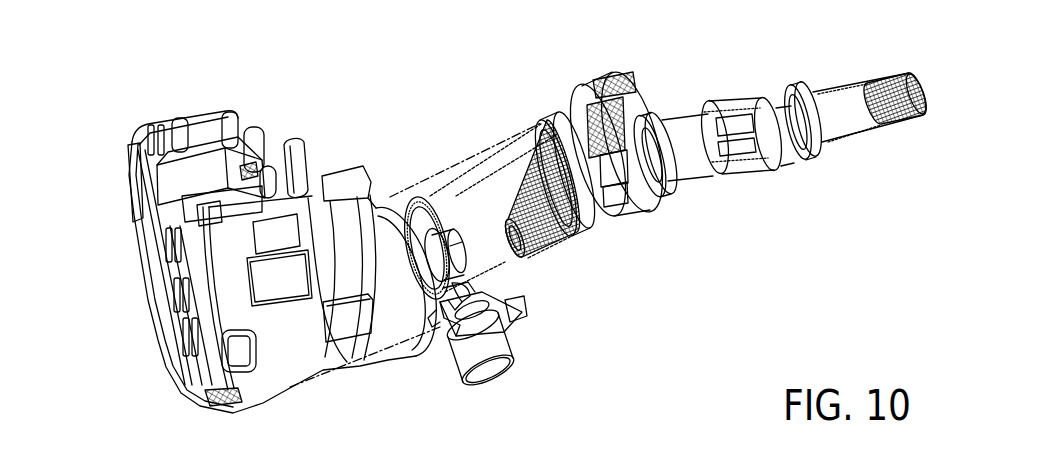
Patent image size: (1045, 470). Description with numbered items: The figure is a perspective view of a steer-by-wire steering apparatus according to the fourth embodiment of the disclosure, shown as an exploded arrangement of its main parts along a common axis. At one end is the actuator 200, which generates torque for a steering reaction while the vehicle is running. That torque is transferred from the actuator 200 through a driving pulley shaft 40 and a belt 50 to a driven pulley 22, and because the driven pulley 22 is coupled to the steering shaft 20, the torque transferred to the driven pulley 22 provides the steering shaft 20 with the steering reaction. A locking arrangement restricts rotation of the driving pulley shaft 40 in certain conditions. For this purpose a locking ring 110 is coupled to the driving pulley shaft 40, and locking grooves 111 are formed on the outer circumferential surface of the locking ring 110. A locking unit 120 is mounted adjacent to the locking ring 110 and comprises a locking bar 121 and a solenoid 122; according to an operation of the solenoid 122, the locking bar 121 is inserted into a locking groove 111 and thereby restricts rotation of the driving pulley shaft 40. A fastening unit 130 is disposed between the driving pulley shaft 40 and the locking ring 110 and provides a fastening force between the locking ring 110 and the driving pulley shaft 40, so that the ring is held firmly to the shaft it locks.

The steering shaft 20 is at (685, 127).
The driven pulley 22 is at (552, 122).
The driving pulley shaft 40 is at (547, 250).
The belt 50 is at (498, 150).
The locking ring 110 is at (463, 260).
The locking groove 111 is at (462, 280).
The locking unit 120 is at (378, 382).
The locking bar 121 is at (463, 372).
The solenoid 122 is at (443, 315).
The fastening unit 130 is at (458, 233).
The actuator 200 is at (307, 202).